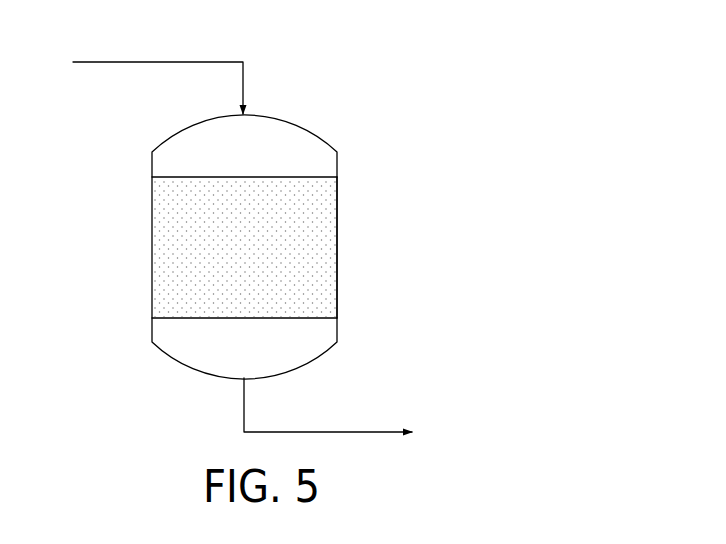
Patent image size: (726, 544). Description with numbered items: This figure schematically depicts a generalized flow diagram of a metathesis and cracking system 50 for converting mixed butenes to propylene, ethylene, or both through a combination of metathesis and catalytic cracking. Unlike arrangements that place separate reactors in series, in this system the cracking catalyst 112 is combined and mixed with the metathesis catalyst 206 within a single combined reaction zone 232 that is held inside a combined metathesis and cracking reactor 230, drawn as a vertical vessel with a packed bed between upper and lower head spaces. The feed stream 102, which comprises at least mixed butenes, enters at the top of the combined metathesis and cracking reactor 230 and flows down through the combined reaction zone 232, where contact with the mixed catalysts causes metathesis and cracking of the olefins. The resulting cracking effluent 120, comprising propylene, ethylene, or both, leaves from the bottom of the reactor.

The metathesis and cracking system 50 is at (394, 82).
The feed stream 102 is at (157, 62).
The cracking catalyst 112 is at (330, 288).
The cracking effluent 120 is at (372, 432).
The metathesis catalyst 206 is at (330, 223).
The combined metathesis and cracking reactor 230 is at (152, 210).
The combined reaction zone 232 is at (326, 209).